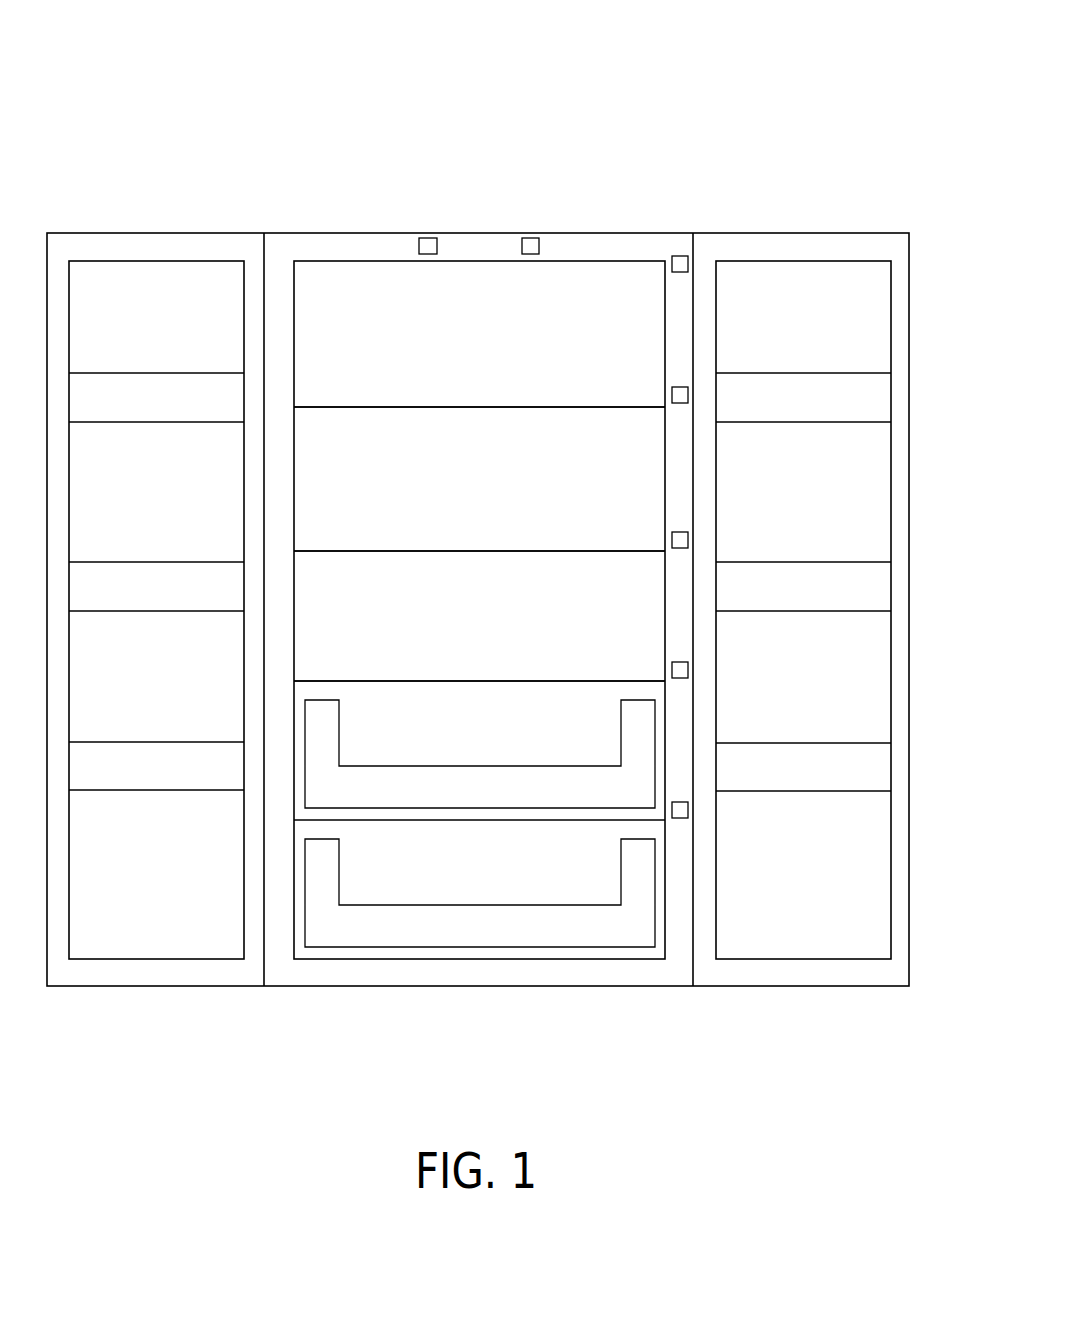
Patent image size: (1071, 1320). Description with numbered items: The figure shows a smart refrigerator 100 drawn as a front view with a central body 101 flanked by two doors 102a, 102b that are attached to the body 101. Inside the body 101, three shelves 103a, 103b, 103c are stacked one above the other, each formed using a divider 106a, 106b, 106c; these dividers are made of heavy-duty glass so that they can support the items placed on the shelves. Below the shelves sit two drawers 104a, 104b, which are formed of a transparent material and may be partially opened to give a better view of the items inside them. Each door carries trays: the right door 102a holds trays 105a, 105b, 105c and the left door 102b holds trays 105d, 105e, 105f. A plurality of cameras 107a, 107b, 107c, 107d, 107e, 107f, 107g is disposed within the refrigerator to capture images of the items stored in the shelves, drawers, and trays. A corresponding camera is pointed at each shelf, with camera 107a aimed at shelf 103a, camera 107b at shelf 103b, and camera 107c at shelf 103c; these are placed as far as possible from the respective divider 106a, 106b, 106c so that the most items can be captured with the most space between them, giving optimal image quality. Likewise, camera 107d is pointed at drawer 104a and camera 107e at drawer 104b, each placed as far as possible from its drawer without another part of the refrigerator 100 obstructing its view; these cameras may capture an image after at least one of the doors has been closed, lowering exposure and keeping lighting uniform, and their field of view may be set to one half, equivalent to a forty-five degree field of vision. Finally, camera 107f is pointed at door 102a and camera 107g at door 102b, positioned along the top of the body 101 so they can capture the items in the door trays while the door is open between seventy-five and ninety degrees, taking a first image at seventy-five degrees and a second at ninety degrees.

The smart refrigerator 100 is at (745, 62).
The body 101 is at (351, 229).
The door 102a is at (803, 228).
The door 102b is at (154, 229).
The shelf 103a is at (500, 344).
The shelf 103b is at (500, 486).
The shelf 103c is at (500, 619).
The drawer 104a is at (501, 801).
The drawer 104b is at (501, 939).
The tray 105a is at (830, 412).
The tray 105b is at (830, 603).
The tray 105c is at (830, 783).
The tray 105d is at (183, 412).
The tray 105e is at (183, 602).
The tray 105f is at (183, 782).
The divider 106a is at (373, 405).
The divider 106b is at (373, 550).
The divider 106c is at (373, 680).
The camera 107a is at (680, 256).
The camera 107b is at (680, 403).
The camera 107c is at (680, 548).
The camera 107d is at (688, 670).
The camera 107e is at (688, 810).
The camera 107f is at (534, 238).
The camera 107g is at (430, 238).